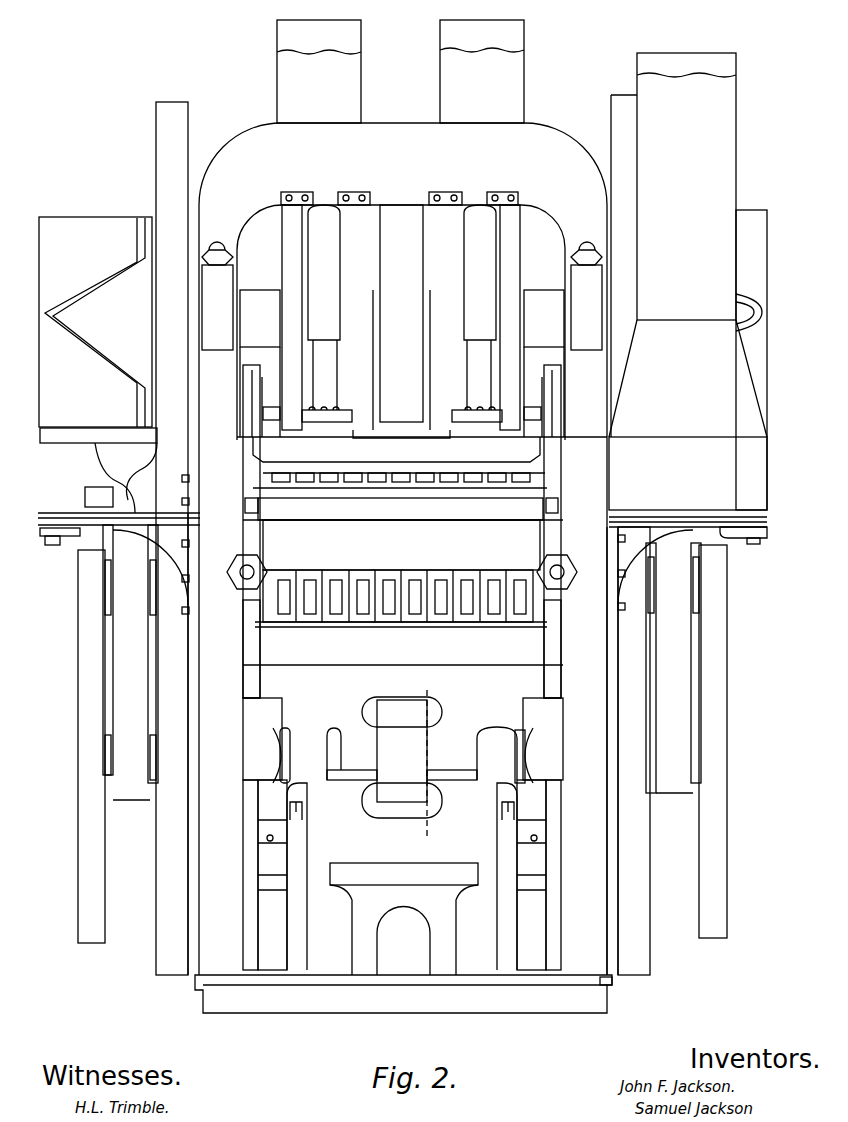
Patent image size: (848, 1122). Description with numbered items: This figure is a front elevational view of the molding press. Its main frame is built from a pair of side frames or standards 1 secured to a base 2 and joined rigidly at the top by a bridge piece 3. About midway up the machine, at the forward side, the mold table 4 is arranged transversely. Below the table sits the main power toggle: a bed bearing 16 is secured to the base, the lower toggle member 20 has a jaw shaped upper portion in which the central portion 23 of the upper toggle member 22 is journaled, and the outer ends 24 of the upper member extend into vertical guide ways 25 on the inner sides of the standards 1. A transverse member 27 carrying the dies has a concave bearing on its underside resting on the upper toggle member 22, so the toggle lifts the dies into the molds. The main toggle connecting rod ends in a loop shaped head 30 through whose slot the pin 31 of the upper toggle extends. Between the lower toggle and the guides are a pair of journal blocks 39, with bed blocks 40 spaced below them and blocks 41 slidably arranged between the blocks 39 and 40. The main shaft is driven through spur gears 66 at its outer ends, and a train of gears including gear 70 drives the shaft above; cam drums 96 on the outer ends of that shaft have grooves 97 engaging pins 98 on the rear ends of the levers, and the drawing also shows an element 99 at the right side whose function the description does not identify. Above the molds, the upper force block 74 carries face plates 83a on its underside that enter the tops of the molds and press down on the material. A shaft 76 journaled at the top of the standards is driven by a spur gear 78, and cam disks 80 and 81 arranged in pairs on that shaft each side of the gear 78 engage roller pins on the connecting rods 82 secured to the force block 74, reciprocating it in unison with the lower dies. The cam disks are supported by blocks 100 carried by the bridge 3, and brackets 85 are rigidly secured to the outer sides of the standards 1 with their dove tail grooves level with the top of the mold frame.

The side frames or standards 1 is at (215, 902).
The base 2 is at (606, 982).
The bridge piece 3 is at (574, 147).
The mold table 4 is at (513, 523).
The bed bearing 16 is at (363, 958).
The lower toggle member 20 is at (330, 848).
The upper toggle member 22 is at (465, 735).
The central portion of the upper toggle member 23 is at (338, 748).
The outer ends of the upper toggle member 24 is at (267, 680).
The vertical guide ways 25 is at (247, 663).
The transverse member 27 is at (537, 637).
The loop shaped head 30 is at (413, 760).
The pin 31 is at (275, 758).
The journal blocks 39 is at (270, 892).
The bed blocks 40 is at (268, 963).
The blocks 41 is at (278, 937).
The spur gears 66 is at (170, 863).
The gear 70 is at (122, 783).
The upper force block 74 is at (526, 448).
The shaft 76 is at (258, 300).
The spur gear 78 is at (399, 215).
The cam disk 80 is at (288, 222).
The cam disk 81 is at (509, 230).
The connecting rods 82 is at (322, 293).
The face plates 83a is at (537, 480).
The brackets 85 is at (153, 538).
The cam drums 96 is at (72, 228).
The grooves 97 is at (139, 232).
The pins 98 is at (140, 433).
The hopper 99 is at (732, 410).
The blocks 100 is at (302, 200).